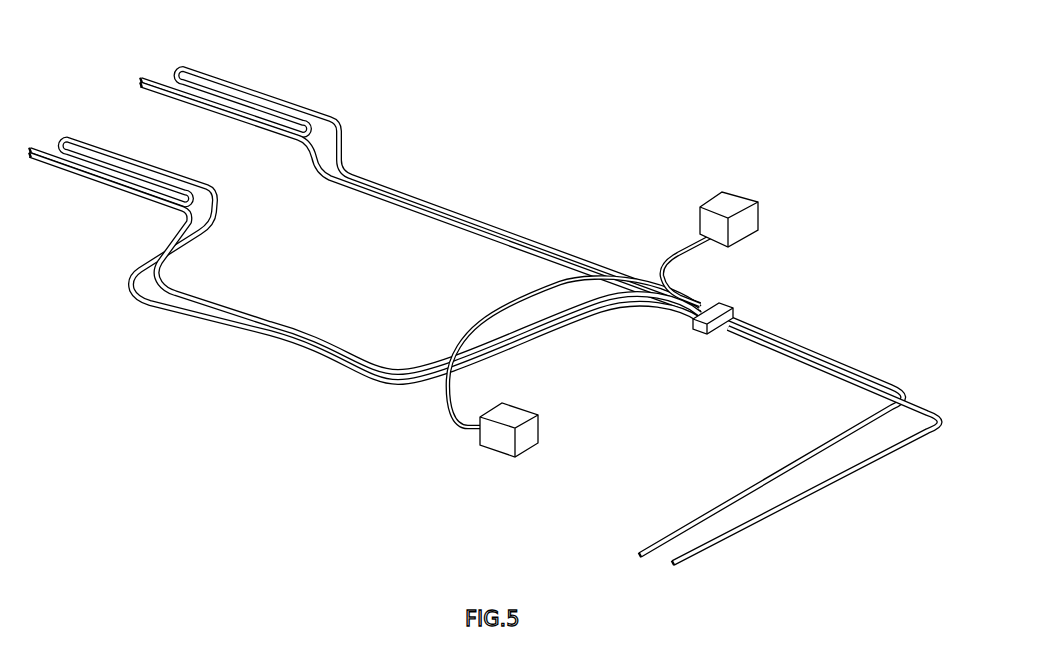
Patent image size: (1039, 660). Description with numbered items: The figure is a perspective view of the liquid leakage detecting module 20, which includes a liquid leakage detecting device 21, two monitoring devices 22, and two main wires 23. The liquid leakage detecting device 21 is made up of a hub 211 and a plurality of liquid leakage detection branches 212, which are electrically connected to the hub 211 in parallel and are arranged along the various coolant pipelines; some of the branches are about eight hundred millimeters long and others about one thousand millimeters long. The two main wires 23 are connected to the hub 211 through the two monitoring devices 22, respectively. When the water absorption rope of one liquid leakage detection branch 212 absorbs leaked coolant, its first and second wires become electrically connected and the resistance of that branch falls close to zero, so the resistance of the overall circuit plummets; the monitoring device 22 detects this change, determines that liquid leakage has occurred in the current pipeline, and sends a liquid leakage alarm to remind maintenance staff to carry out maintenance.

The liquid leakage detecting module 20 is at (94, 38).
The liquid leakage detecting device 21 is at (702, 334).
The hub 211 is at (724, 304).
The liquid leakage detection branches 212 is at (453, 207).
The monitoring device 22 is at (728, 203).
The main wire 23 is at (503, 313).